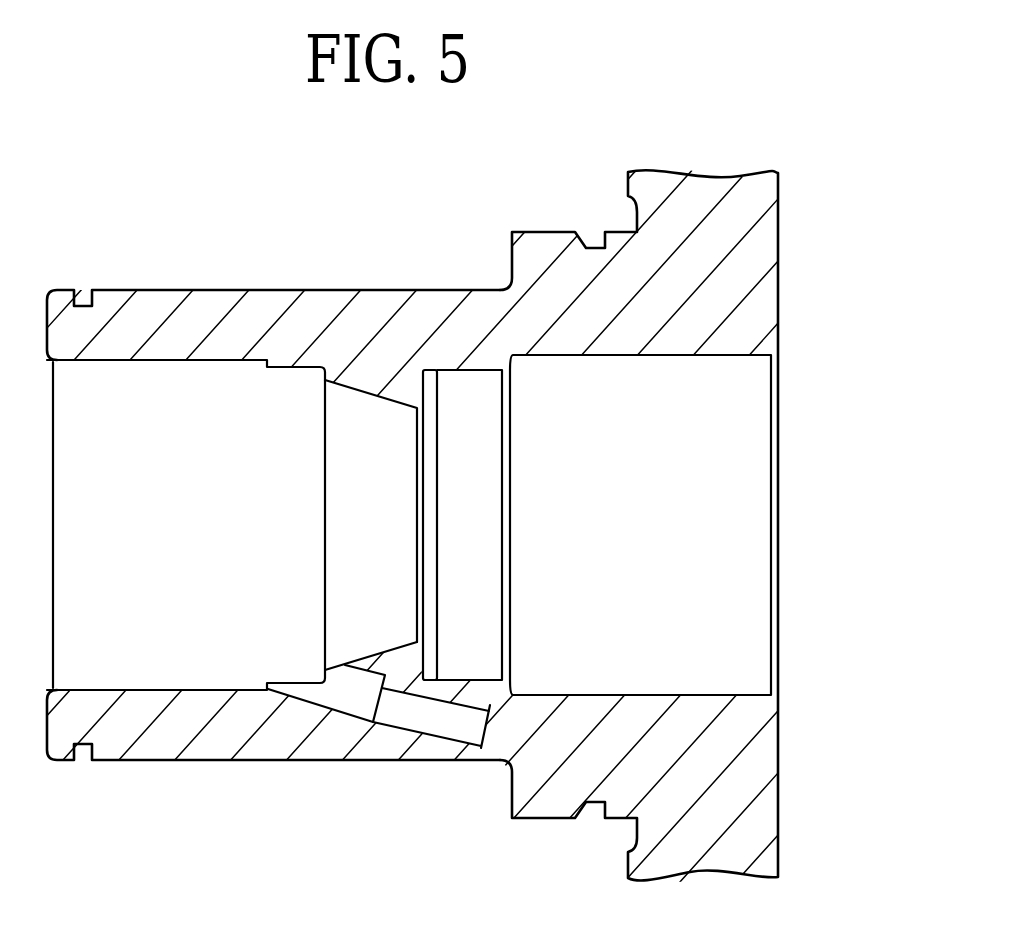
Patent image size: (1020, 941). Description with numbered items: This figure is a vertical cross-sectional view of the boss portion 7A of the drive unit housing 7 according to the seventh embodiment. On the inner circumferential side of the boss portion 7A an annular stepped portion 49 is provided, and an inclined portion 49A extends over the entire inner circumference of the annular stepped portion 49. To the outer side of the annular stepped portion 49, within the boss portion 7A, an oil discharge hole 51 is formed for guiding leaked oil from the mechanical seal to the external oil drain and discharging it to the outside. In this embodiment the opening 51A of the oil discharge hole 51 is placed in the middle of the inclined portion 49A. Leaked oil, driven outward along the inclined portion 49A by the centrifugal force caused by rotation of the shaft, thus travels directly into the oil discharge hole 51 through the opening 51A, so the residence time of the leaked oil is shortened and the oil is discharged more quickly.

The drive unit housing 7 is at (760, 254).
The boss portion 7A is at (182, 300).
The annular stepped portion 49 is at (372, 388).
The inclined portion 49A is at (375, 652).
The oil discharge hole 51 is at (410, 710).
The opening 51A is at (309, 681).